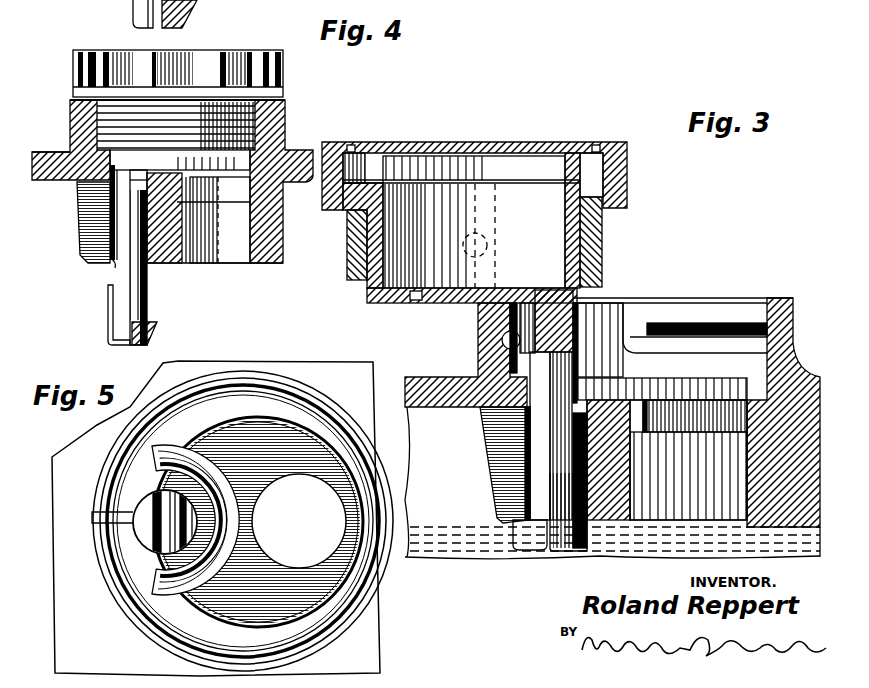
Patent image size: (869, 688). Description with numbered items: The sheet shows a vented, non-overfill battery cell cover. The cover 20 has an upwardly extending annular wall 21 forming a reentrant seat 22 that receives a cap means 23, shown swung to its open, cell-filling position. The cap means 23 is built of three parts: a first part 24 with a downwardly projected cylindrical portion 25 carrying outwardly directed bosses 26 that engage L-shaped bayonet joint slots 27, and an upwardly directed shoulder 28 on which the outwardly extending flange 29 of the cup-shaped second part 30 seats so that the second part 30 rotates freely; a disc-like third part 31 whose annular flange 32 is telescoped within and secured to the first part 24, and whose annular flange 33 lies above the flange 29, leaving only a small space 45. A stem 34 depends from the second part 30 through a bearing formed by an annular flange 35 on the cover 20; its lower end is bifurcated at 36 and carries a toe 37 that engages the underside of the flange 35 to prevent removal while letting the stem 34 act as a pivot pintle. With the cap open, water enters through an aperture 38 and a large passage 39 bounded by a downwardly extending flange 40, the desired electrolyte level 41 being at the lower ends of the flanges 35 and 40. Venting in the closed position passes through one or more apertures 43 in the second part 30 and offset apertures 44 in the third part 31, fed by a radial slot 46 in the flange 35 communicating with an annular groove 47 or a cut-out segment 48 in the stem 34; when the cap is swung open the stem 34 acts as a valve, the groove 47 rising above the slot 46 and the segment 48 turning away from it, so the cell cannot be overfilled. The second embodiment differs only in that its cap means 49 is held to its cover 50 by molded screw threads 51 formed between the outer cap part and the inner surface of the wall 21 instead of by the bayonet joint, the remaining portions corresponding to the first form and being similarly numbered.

In FIG. 3, the cover 20 is at (443, 406).
In FIG. 4, the annular wall 21 is at (288, 128).
In FIG. 3, the annular wall 21 is at (790, 302).
In FIG. 3, the reentrant seat 22 is at (788, 368).
In FIG. 3, the cap means 23 is at (610, 238).
In FIG. 3, the first part 24 is at (624, 188).
In FIG. 3, the cylindrical portion 25 is at (603, 266).
In FIG. 3, the bosses 26 is at (488, 245).
In FIG. 3, the bayonet joint slots 27 is at (496, 342).
In FIG. 3, the shoulder 28 is at (347, 228).
In FIG. 3, the flange 29 is at (321, 209).
In FIG. 3, the second part 30 is at (365, 297).
In FIG. 3, the third part 31 is at (530, 142).
In FIG. 3, the annular flange 32 is at (626, 152).
In FIG. 3, the annular flange 33 is at (396, 148).
In FIG. 4, the stem 34 is at (147, 280).
In FIG. 3, the stem 34 is at (542, 432).
In FIG. 4, the annular flange 35 is at (164, 218).
In FIG. 3, the annular flange 35 is at (609, 522).
In FIG. 5, the annular flange 35 is at (195, 487).
In FIG. 4, the bifurcation 36 is at (122, 320).
In FIG. 3, the bifurcation 36 is at (559, 545).
In FIG. 4, the toe 37 is at (193, 10).
In FIG. 3, the toe 37 is at (523, 534).
In FIG. 5, the toe 37 is at (227, 577).
In FIG. 4, the aperture 38 is at (220, 195).
In FIG. 3, the aperture 38 is at (660, 433).
In FIG. 5, the aperture 38 is at (284, 478).
In FIG. 4, the passage 39 is at (225, 256).
In FIG. 3, the passage 39 is at (735, 478).
In FIG. 5, the passage 39 is at (308, 441).
In FIG. 4, the flange 40 is at (266, 266).
In FIG. 3, the flange 40 is at (762, 522).
In FIG. 5, the flange 40 is at (335, 602).
In FIG. 3, the electrolyte level 41 is at (459, 522).
In FIG. 3, the apertures 43 is at (415, 301).
In FIG. 3, the apertures 44 is at (352, 142).
In FIG. 3, the space 45 is at (458, 180).
In FIG. 4, the radial slot 46 is at (88, 248).
In FIG. 3, the radial slot 46 is at (498, 487).
In FIG. 5, the radial slot 46 is at (93, 512).
In FIG. 4, the annular groove 47 is at (140, 197).
In FIG. 3, the annular groove 47 is at (533, 317).
In FIG. 4, the cut-out segment 48 is at (117, 260).
In FIG. 3, the cut-out segment 48 is at (578, 370).
In FIG. 4, the cap means 49 is at (288, 78).
In FIG. 4, the cover 50 is at (44, 153).
In FIG. 4, the screw threads 51 is at (288, 112).